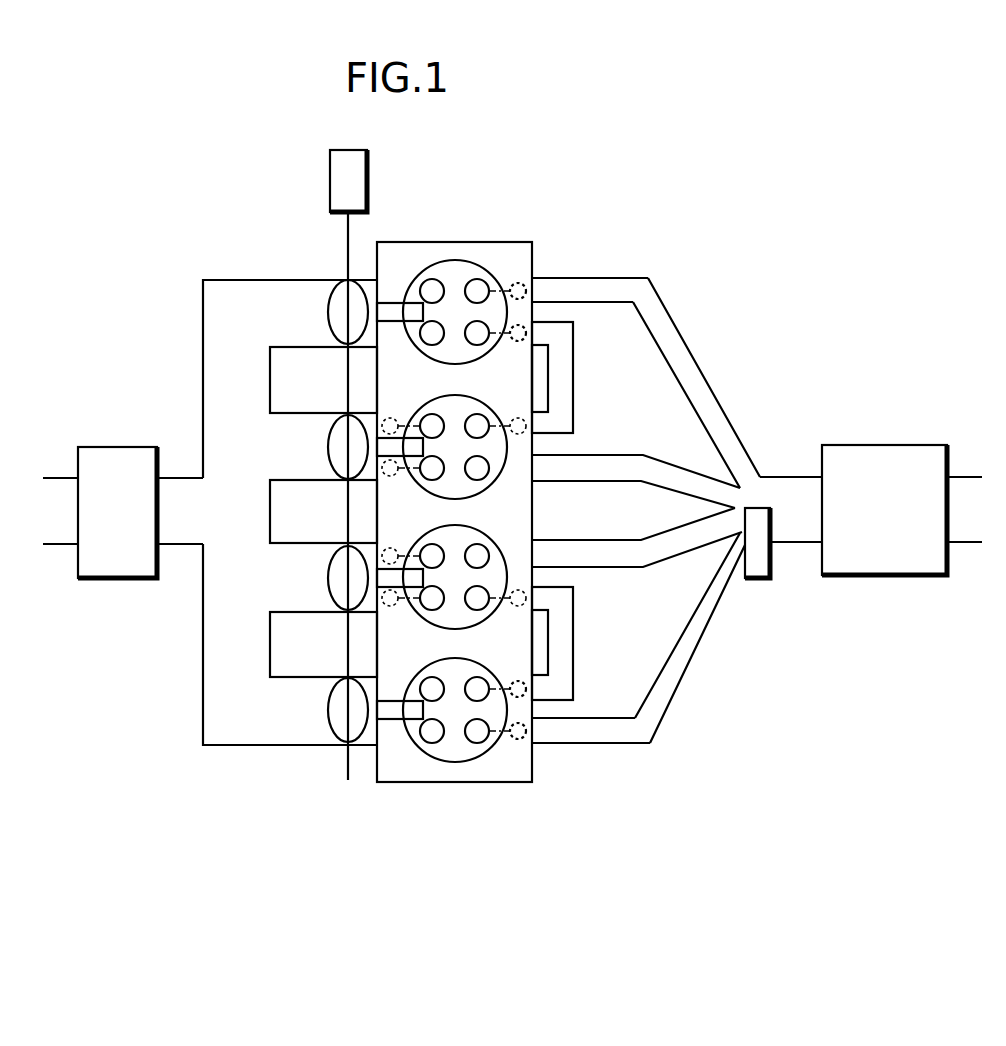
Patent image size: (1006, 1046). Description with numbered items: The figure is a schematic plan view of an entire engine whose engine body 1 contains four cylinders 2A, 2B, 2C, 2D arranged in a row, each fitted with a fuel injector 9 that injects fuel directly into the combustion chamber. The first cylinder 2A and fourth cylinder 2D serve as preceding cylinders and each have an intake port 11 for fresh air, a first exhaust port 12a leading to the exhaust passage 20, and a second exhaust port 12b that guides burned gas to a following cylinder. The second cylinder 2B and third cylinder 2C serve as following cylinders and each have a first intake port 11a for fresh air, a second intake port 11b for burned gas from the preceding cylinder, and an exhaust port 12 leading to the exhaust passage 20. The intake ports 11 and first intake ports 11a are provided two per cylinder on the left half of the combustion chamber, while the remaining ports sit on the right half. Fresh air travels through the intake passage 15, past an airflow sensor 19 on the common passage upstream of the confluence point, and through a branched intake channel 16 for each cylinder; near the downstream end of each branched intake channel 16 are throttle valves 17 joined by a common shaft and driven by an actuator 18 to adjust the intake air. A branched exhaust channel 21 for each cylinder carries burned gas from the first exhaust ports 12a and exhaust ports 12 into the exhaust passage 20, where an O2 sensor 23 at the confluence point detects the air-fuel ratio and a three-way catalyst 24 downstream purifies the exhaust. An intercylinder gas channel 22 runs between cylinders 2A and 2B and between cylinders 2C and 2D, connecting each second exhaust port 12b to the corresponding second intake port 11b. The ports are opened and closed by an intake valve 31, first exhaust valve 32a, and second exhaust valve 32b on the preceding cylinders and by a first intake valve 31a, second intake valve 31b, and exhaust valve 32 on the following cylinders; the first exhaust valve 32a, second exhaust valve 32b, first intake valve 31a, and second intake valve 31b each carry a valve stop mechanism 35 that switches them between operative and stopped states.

The engine body 1 is at (388, 224).
The first cylinder 2A is at (498, 278).
The second cylinder 2B is at (427, 397).
The third cylinder 2C is at (492, 540).
The fourth cylinder 2D is at (495, 748).
The fuel injector 9 is at (377, 315).
The intake port 11 is at (391, 278).
The first intake port 11a is at (347, 390).
The second intake port 11b is at (550, 400).
The exhaust port 12 is at (535, 536).
The first exhaust port 12a is at (519, 283).
The second exhaust port 12b is at (552, 347).
The intake passage 15 is at (58, 477).
The branched intake channel 16 is at (222, 278).
The throttle valve 17 is at (330, 742).
The actuator 18 is at (330, 166).
The airflow sensor 19 is at (95, 582).
The exhaust passage 20 is at (788, 476).
The branched exhaust channel 21 is at (626, 277).
The intercylinder gas channel 22 is at (573, 330).
The O2 sensor 23 is at (760, 580).
The three-way catalyst 24 is at (880, 578).
The intake valve 31 is at (437, 285).
The first intake valve 31a is at (433, 481).
The second intake valve 31b is at (489, 430).
The exhaust valve 32 is at (478, 481).
The first exhaust valve 32a is at (470, 284).
The second exhaust valve 32b is at (474, 346).
The valve stop mechanism 35 is at (530, 331).